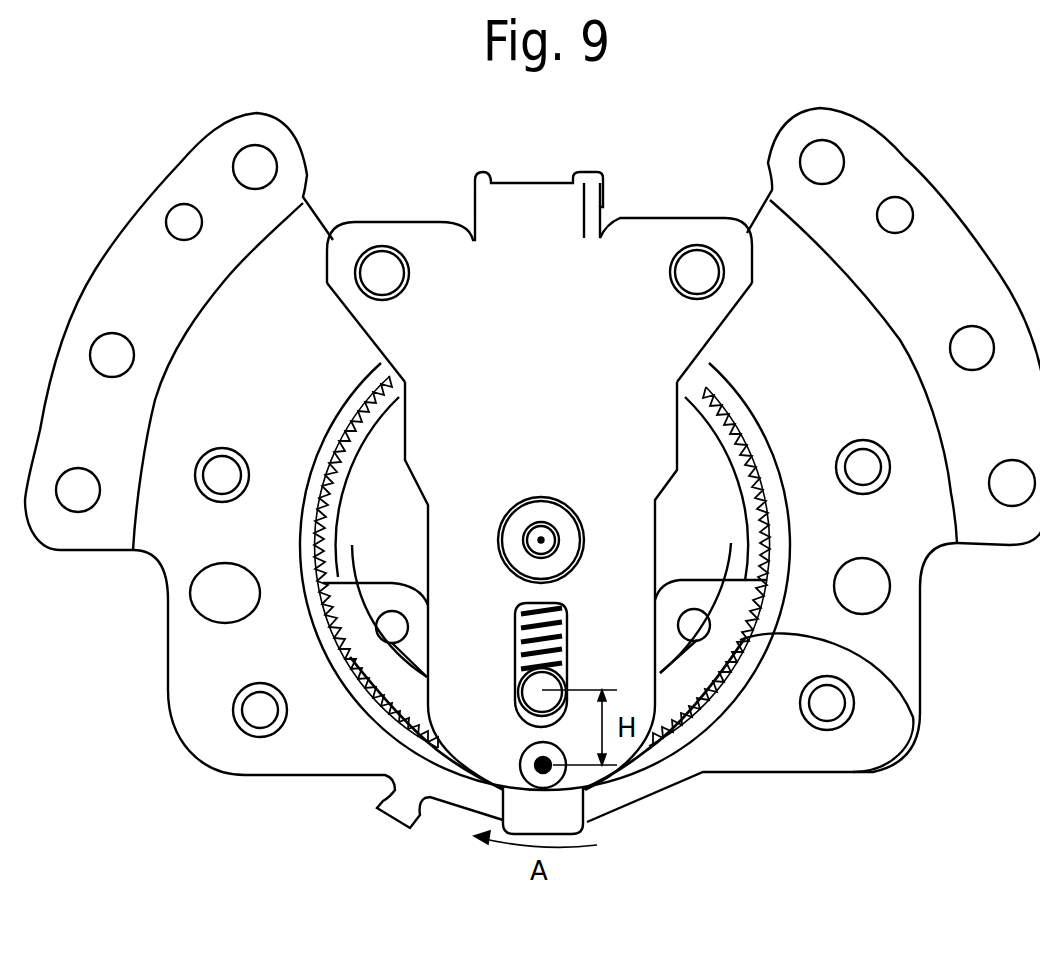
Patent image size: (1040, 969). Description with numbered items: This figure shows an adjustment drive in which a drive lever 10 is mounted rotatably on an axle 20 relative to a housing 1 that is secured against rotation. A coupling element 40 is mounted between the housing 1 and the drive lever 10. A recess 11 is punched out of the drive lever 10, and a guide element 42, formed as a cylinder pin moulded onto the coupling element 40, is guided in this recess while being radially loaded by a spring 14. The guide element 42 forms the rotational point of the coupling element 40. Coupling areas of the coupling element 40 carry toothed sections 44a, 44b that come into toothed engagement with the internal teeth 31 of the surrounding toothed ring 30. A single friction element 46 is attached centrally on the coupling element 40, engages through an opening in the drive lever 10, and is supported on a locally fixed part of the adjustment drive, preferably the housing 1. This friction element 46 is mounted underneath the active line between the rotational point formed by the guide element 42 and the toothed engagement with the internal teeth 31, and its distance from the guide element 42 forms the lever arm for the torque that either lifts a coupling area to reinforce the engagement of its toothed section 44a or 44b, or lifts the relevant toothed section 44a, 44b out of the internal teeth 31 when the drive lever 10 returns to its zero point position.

The housing 1 is at (893, 643).
The drive lever 10 is at (560, 812).
The recess 11 is at (570, 622).
The spring 14 is at (568, 635).
The axle 20 is at (541, 538).
The internal teeth carrier 30 is at (675, 741).
The internal teeth 31 is at (413, 737).
The coupling element 40 is at (693, 674).
The guide element 42 is at (530, 694).
The toothed section 44a is at (907, 720).
The toothed section 44b is at (333, 620).
The friction element 46 is at (540, 771).